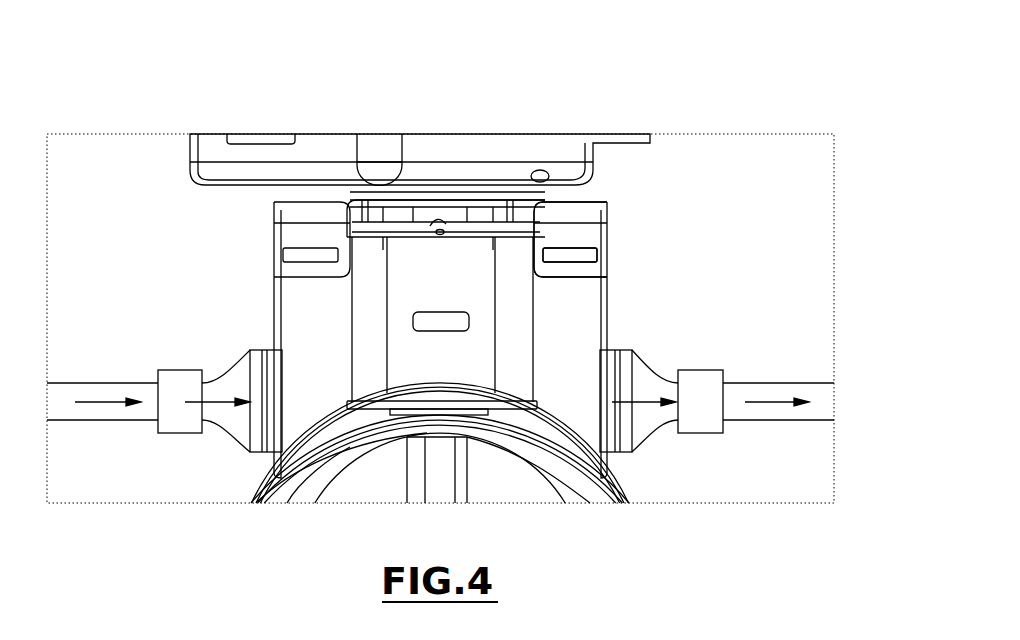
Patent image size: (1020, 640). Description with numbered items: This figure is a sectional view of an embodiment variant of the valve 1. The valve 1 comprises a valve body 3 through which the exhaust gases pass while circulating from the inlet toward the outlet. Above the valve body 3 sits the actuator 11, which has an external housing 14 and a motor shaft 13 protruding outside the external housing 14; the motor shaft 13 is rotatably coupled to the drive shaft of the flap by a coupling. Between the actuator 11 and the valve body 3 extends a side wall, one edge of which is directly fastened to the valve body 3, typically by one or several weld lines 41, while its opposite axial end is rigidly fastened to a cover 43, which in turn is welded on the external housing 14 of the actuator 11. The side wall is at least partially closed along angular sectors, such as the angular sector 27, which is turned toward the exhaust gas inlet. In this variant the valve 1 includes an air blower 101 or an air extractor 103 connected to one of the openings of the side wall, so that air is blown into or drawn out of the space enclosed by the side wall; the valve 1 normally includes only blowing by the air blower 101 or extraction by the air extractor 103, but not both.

The valve 1 is at (706, 94).
The valve body 3 is at (258, 492).
The actuator 11 is at (500, 129).
The motor shaft 13 is at (435, 220).
The external housing 14 is at (429, 147).
The angular sector 27 is at (298, 297).
The weld line 41 is at (608, 502).
The cover 43 is at (588, 231).
The air blower 101 is at (175, 421).
The air extractor 103 is at (706, 421).